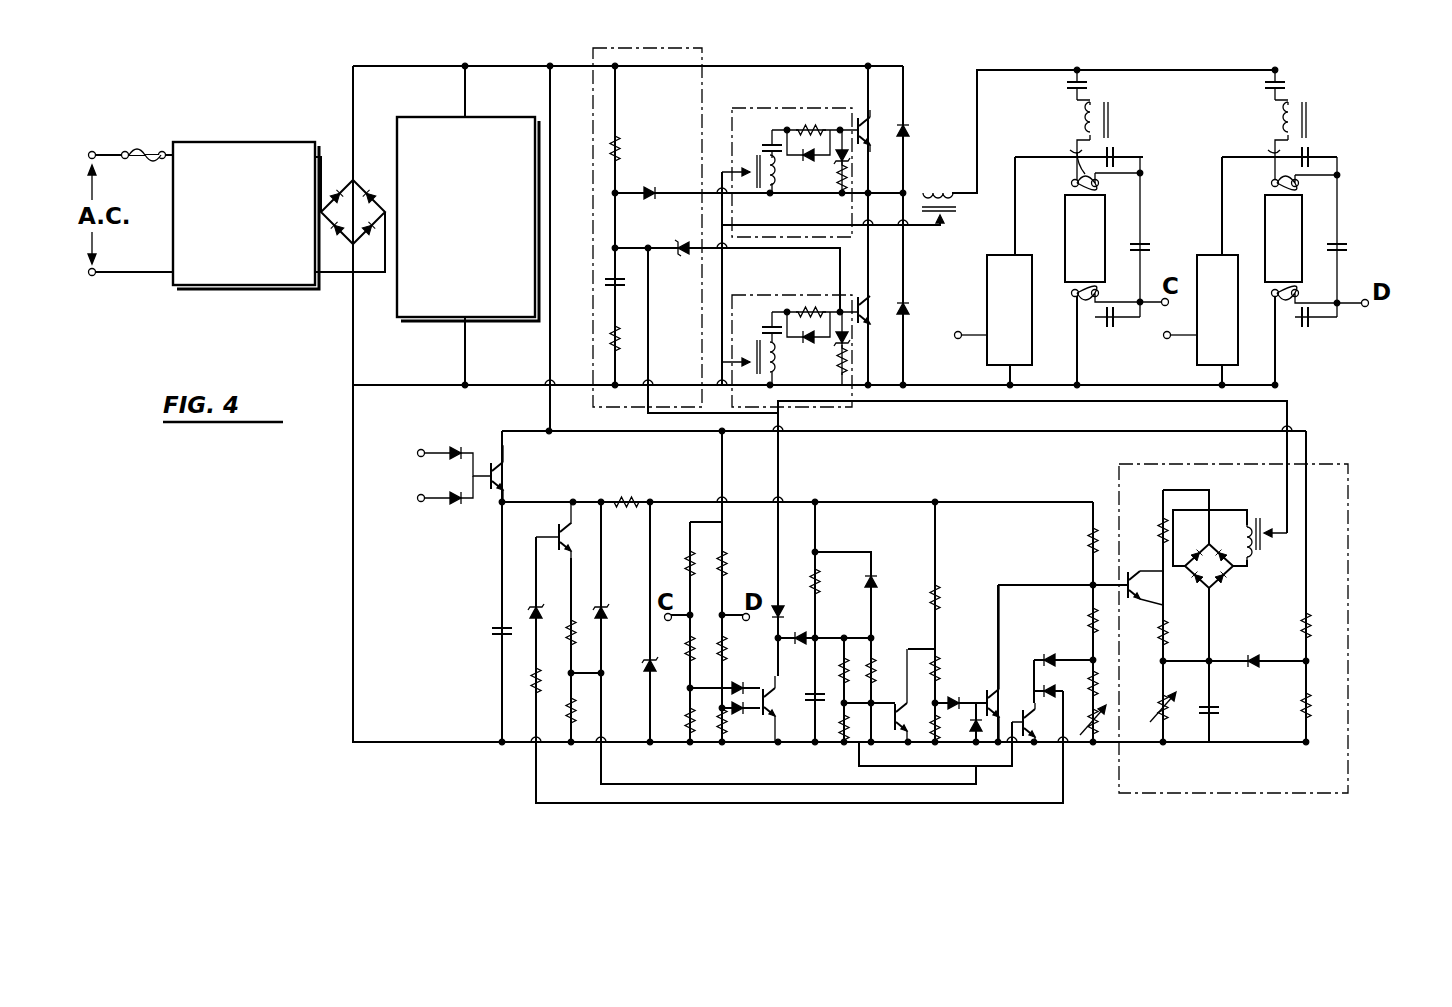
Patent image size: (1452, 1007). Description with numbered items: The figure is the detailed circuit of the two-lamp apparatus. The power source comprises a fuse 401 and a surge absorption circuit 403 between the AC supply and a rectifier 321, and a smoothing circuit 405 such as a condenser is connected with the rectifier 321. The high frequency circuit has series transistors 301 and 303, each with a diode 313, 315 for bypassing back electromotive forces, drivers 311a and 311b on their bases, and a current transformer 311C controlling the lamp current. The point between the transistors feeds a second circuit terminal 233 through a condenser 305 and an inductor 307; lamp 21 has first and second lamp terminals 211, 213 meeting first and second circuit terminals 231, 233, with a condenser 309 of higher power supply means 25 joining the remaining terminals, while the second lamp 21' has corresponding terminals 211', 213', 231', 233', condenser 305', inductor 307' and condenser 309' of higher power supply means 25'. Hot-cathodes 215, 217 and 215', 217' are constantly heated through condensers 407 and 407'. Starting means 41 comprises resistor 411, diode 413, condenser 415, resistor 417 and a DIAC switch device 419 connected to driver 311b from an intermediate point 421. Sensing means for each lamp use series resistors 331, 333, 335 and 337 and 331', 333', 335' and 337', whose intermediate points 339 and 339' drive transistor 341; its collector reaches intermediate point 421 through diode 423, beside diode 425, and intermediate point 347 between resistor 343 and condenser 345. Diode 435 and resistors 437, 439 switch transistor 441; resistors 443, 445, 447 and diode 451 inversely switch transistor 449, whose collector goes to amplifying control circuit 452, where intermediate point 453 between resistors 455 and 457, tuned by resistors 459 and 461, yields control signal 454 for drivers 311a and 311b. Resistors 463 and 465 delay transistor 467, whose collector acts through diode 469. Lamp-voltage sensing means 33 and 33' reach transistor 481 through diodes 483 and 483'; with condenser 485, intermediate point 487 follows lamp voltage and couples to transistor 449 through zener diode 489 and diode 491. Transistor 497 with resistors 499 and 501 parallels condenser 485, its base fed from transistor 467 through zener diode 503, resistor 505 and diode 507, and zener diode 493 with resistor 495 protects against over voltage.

The fuse 401 is at (132, 142).
The surge absorption circuit 403 is at (265, 125).
The rectifier 321 is at (350, 157).
The smoothing circuit 405 is at (439, 116).
The starting means 41 is at (664, 48).
The resistor 411 is at (619, 126).
The diode 413 is at (646, 188).
The condenser 415 is at (630, 250).
The resistor 417 is at (623, 332).
The switch device 419 is at (683, 254).
The intermediate point 421 is at (620, 278).
The driver 311a is at (810, 107).
The driver 311b is at (810, 295).
The current transformer 311C is at (940, 188).
The transistor 301 is at (865, 107).
The transistor 303 is at (870, 300).
The diode 313 is at (910, 125).
The diode 315 is at (916, 308).
The condenser 305 is at (1111, 71).
The inductor 307 is at (1124, 118).
The second lamp terminal 213 is at (1039, 144).
The second circuit terminal 233 is at (1057, 129).
The condenser 407 is at (1137, 238).
The condenser 309 is at (1144, 231).
The higher power supply means 25 is at (1171, 179).
The hot-cathode 217 is at (1058, 183).
The discharge lamp 21 is at (1062, 238).
The hot-cathode 215 is at (1100, 303).
The first lamp terminal 211 is at (1112, 350).
The first circuit terminal 231 is at (1157, 367).
The capacitor 305' is at (1307, 73).
The transformer 307' is at (1331, 117).
The primary winding 213' is at (1226, 143).
The secondary winding 233' is at (1251, 128).
The condenser 407' is at (1346, 234).
The capacitor 309' is at (1347, 237).
The capacitor 25' is at (1423, 217).
The hot-cathode 217' is at (1342, 188).
The discharge lamp 21' is at (1302, 238).
The hot-cathode 215' is at (1342, 275).
The first lamp terminal 211' is at (1329, 341).
The first circuit terminal 231' is at (1381, 358).
The V_L sensing means 33 is at (946, 345).
The V_L sensing means 33' is at (1206, 346).
The control signal 454 is at (1292, 418).
The amplifying control circuit 452 is at (1242, 796).
The transistor 481 is at (483, 464).
The diode 483 is at (444, 444).
The diode 483' is at (435, 509).
The intermediate point 487 is at (502, 506).
The transistor 497 is at (578, 482).
The resistor 495 is at (630, 501).
The condenser 485 is at (490, 631).
The zener diode 503 is at (532, 628).
The resistor 505 is at (529, 680).
The resistor 499 is at (527, 741).
The resistor 501 is at (570, 734).
The zener diode 489 is at (602, 604).
The zener diode 493 is at (647, 664).
The resistor 333 is at (647, 695).
The resistor 337 is at (651, 639).
The resistor 331 is at (681, 540).
The resistor 331' is at (750, 545).
The resistor 337' is at (751, 615).
The resistor 333' is at (750, 677).
The diode 425 is at (766, 686).
The resistor 335 is at (692, 771).
The intermediate point 339 is at (651, 804).
The intermediate point 339' is at (734, 804).
The resistor 335' is at (764, 793).
The transistor 341 is at (780, 754).
The condenser 345 is at (808, 734).
The resistor 465 is at (904, 760).
The resistor 439 is at (845, 754).
The transistor 441 is at (930, 754).
The resistor 447 is at (948, 736).
The diode 451 is at (974, 710).
The transistor 449 is at (1000, 668).
The diode 491 is at (1029, 768).
The diode 469 is at (1064, 652).
The transistor 467 is at (1077, 736).
The diode 507 is at (1088, 754).
The resistor 455 is at (1085, 524).
The intermediate point 453 is at (1090, 574).
The resistor 457 is at (1092, 610).
The diode 423 is at (778, 579).
The resistor 343 is at (815, 544).
The intermediate point 347 is at (822, 578).
The diode 435 is at (867, 568).
The resistor 463 is at (821, 637).
The resistor 437 is at (872, 668).
The resistor 443 is at (934, 574).
The resistor 445 is at (934, 664).
The resistor 459 is at (1106, 742).
The resistor 461 is at (1096, 744).